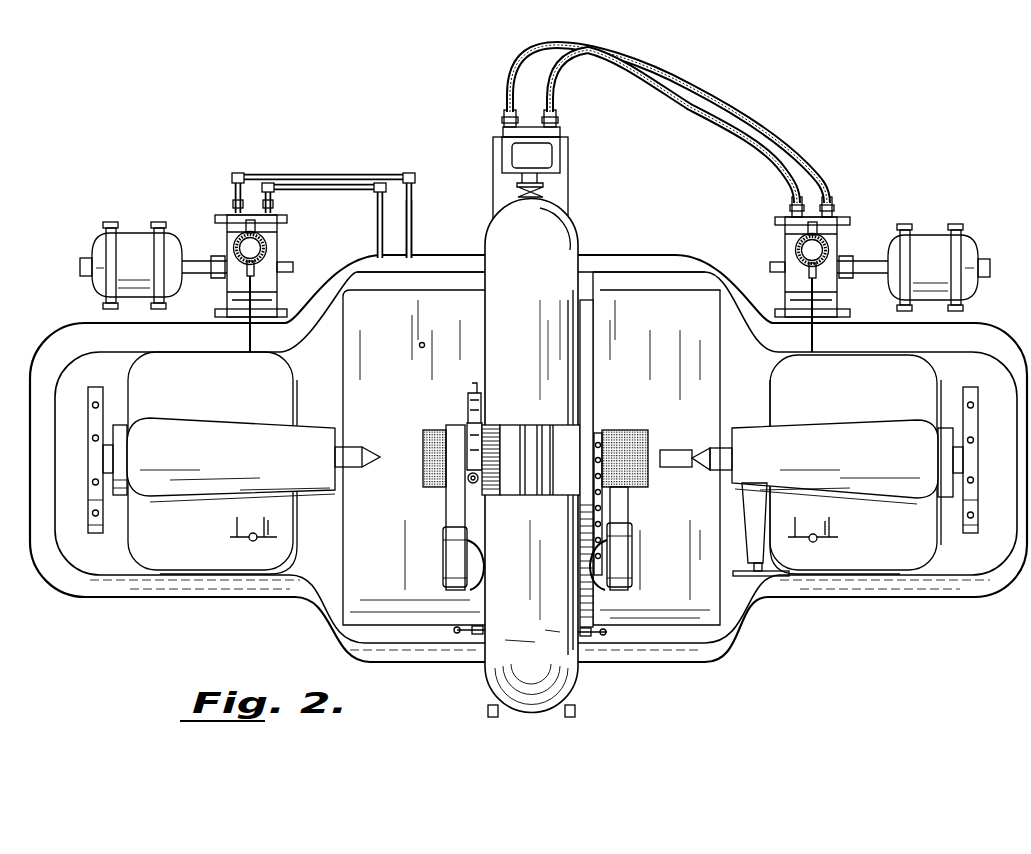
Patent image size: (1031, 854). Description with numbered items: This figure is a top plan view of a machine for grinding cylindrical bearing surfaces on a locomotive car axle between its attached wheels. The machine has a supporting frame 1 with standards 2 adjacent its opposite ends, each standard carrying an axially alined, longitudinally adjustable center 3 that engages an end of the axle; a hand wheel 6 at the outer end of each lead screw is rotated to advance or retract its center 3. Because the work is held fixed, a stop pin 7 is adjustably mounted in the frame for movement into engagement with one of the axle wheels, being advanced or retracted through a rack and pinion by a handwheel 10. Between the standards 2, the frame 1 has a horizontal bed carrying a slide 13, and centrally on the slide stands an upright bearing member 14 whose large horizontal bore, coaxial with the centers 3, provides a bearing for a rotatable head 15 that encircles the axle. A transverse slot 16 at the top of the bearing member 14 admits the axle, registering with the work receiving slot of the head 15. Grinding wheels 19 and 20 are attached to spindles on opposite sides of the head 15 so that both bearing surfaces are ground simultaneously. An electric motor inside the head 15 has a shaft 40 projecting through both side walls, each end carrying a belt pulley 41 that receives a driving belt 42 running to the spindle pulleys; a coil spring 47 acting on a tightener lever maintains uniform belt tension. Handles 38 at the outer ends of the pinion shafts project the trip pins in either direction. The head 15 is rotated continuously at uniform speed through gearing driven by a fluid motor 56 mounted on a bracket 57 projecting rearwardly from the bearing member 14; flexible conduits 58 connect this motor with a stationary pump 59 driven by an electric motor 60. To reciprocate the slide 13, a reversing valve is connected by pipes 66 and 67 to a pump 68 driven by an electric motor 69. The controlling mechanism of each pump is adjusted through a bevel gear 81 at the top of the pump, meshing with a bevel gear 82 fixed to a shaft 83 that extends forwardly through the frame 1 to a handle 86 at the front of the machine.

The supporting frame 1 is at (688, 662).
The standards 2 is at (226, 432).
The centers 3 is at (352, 455).
The hand wheel 6 is at (92, 426).
The stop pin 7 is at (682, 452).
The handwheel 10 is at (774, 578).
The slide 13 is at (686, 288).
The bearing member 14 is at (570, 238).
The rotatable head 15 is at (593, 433).
The transverse slot 16 is at (518, 497).
The grinding wheel 19 is at (639, 432).
The grinding wheel 20 is at (425, 442).
The handles 38 is at (490, 716).
The motor shaft 40 is at (470, 591).
The belt pulley 41 is at (447, 561).
The driving belt 42 is at (446, 500).
The coil spring 47 is at (604, 522).
The fluid motor 56 is at (560, 152).
The bracket 57 is at (566, 186).
The flexible conduits 58 is at (722, 116).
The pump 59 is at (838, 258).
The electric motor 60 is at (932, 240).
The pipe 66 is at (413, 226).
The pipe 67 is at (340, 176).
The pump 68 is at (278, 263).
The electric motor 69 is at (146, 240).
The bevel gear 81 is at (263, 243).
The bevel gear 82 is at (256, 266).
The shaft 83 is at (256, 338).
The handle 86 is at (253, 541).